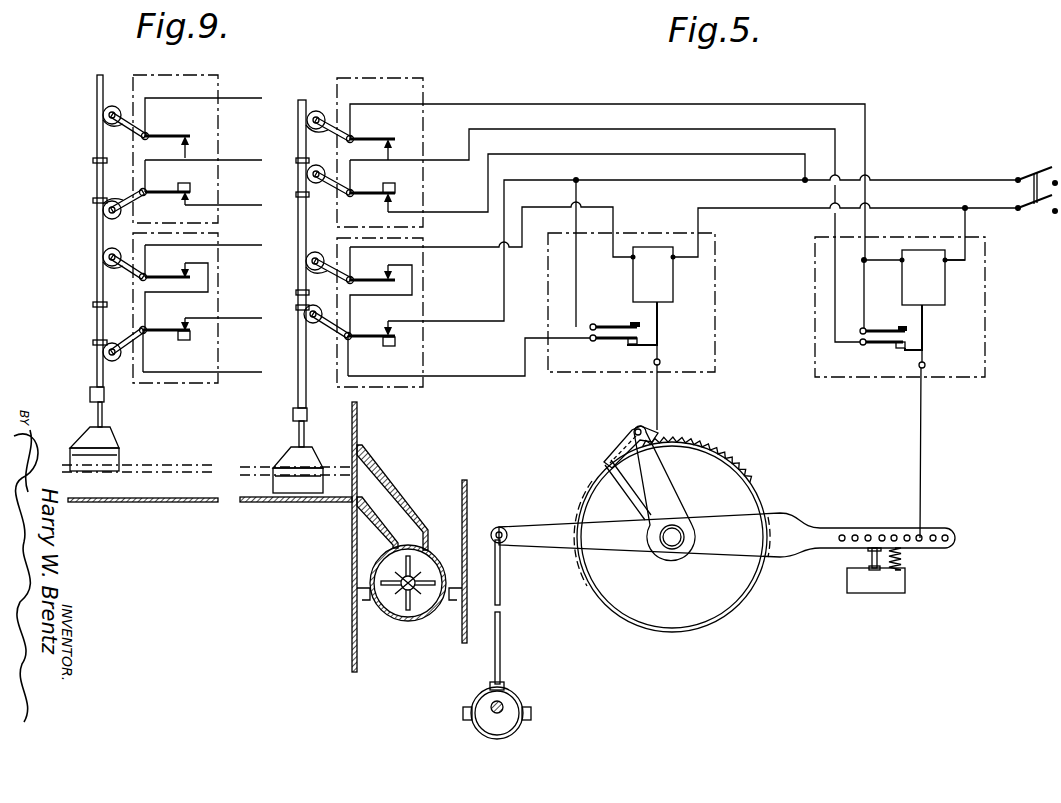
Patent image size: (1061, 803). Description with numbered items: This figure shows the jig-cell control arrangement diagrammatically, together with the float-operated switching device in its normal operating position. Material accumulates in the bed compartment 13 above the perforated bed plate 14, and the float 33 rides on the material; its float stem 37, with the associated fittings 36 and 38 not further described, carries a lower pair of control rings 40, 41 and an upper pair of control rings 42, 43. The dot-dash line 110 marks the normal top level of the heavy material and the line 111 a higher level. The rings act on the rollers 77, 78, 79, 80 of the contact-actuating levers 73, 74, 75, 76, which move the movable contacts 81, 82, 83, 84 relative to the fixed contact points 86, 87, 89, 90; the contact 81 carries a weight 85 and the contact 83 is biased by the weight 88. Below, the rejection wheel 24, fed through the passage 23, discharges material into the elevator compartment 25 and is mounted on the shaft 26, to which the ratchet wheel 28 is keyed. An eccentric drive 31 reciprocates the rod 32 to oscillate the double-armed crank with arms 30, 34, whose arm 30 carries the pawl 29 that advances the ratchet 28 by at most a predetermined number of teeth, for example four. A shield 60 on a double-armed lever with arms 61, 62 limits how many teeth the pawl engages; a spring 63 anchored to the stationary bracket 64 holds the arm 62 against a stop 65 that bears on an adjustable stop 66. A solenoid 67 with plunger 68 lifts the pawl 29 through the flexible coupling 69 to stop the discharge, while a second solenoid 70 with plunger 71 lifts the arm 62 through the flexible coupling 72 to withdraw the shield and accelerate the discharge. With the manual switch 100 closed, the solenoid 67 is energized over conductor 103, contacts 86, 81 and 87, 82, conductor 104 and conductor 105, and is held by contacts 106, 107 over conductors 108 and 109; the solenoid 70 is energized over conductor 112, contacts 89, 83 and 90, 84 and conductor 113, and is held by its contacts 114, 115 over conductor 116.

In FIG. 9, the bed compartment 13 is at (198, 503).
In FIG. 5, the bed compartment 13 is at (266, 495).
In FIG. 9, the perforated bed plate 14 is at (178, 503).
In FIG. 5, the perforated bed plate 14 is at (321, 500).
In FIG. 5, the chute 23 is at (403, 507).
In FIG. 5, the rejection wheel 24 is at (412, 580).
In FIG. 5, the elevator compartment 25 is at (366, 640).
In FIG. 5, the shaft 26 is at (398, 594).
In FIG. 5, the ratchet wheel 28 is at (745, 484).
In FIG. 5, the pawl 29 is at (661, 437).
In FIG. 5, the crank arm 30 is at (658, 488).
In FIG. 5, the eccentric drive 31 is at (525, 727).
In FIG. 5, the rod 32 is at (501, 618).
In FIG. 9, the float 33 is at (108, 470).
In FIG. 5, the float 33 is at (288, 484).
In FIG. 5, the crank arm 34 is at (546, 538).
In FIG. 9, the stem 36 is at (100, 418).
In FIG. 5, the stem 36 is at (299, 432).
In FIG. 9, the rod 37 is at (94, 242).
In FIG. 5, the rod 37 is at (298, 372).
In FIG. 9, the collar 38 is at (90, 392).
In FIG. 5, the collar 38 is at (307, 414).
In FIG. 9, the control ring 40 is at (93, 343).
In FIG. 5, the control ring 40 is at (298, 310).
In FIG. 9, the control ring 41 is at (93, 304).
In FIG. 5, the control ring 41 is at (296, 292).
In FIG. 9, the control ring 42 is at (93, 200).
In FIG. 5, the control ring 42 is at (297, 196).
In FIG. 9, the control ring 43 is at (93, 160).
In FIG. 5, the control ring 43 is at (298, 158).
In FIG. 5, the shield 60 is at (620, 453).
In FIG. 5, the lever arm 61 is at (622, 483).
In FIG. 5, the lever arm 62 is at (774, 571).
In FIG. 5, the spring 63 is at (905, 560).
In FIG. 5, the stationary bracket 64 is at (892, 596).
In FIG. 5, the stop 65 is at (870, 552).
In FIG. 5, the adjustable stop 66 is at (870, 572).
In FIG. 5, the solenoid 67 is at (653, 274).
In FIG. 5, the plunger 68 is at (660, 333).
In FIG. 5, the flexible coupling 69 is at (660, 400).
In FIG. 5, the solenoid 70 is at (913, 277).
In FIG. 5, the plunger 71 is at (926, 326).
In FIG. 5, the flexible coupling 72 is at (926, 436).
In FIG. 9, the contact-actuating lever 73 is at (118, 340).
In FIG. 5, the contact-actuating lever 73 is at (333, 328).
In FIG. 9, the contact-actuating lever 74 is at (120, 272).
In FIG. 5, the contact-actuating lever 74 is at (326, 270).
In FIG. 9, the contact-actuating lever 75 is at (126, 200).
In FIG. 5, the contact-actuating lever 75 is at (333, 186).
In FIG. 9, the contact-actuating lever 76 is at (122, 130).
In FIG. 5, the contact-actuating lever 76 is at (333, 131).
In FIG. 9, the roller 77 is at (114, 362).
In FIG. 5, the roller 77 is at (315, 305).
In FIG. 9, the roller 78 is at (103, 260).
In FIG. 5, the roller 78 is at (306, 257).
In FIG. 9, the roller 79 is at (103, 212).
In FIG. 5, the roller 79 is at (307, 174).
In FIG. 9, the roller 80 is at (104, 112).
In FIG. 5, the roller 80 is at (317, 110).
In FIG. 9, the movable contact 81 is at (161, 333).
In FIG. 5, the movable contact 81 is at (366, 340).
In FIG. 9, the movable contact 82 is at (192, 279).
In FIG. 5, the movable contact 82 is at (376, 278).
In FIG. 9, the movable contact 83 is at (156, 196).
In FIG. 5, the movable contact 83 is at (369, 196).
In FIG. 9, the movable contact 84 is at (181, 134).
In FIG. 5, the movable contact 84 is at (379, 137).
In FIG. 9, the weight 85 is at (186, 342).
In FIG. 5, the weight 85 is at (392, 347).
In FIG. 9, the fixed contact point 86 is at (183, 322).
In FIG. 5, the fixed contact point 86 is at (386, 328).
In FIG. 9, the fixed contact point 87 is at (185, 266).
In FIG. 5, the fixed contact point 87 is at (395, 273).
In FIG. 9, the weight 88 is at (178, 186).
In FIG. 5, the weight 88 is at (394, 188).
In FIG. 9, the fixed contact 89 is at (190, 201).
In FIG. 5, the fixed contact 89 is at (394, 205).
In FIG. 9, the fixed contact point 90 is at (187, 151).
In FIG. 5, the fixed contact point 90 is at (394, 151).
In FIG. 5, the switch 100 is at (1034, 177).
In FIG. 9, the conductor 103 is at (230, 320).
In FIG. 5, the conductor 103 is at (645, 180).
In FIG. 9, the conductor 104 is at (229, 246).
In FIG. 5, the conductor 104 is at (486, 247).
In FIG. 5, the conductor 105 is at (762, 212).
In FIG. 5, the holding contact 106 is at (618, 325).
In FIG. 5, the holding contact 107 is at (617, 342).
In FIG. 5, the conductor 108 is at (578, 280).
In FIG. 9, the conductor 109 is at (236, 374).
In FIG. 5, the conductor 109 is at (478, 378).
In FIG. 9, the level line 110 is at (180, 472).
In FIG. 5, the level line 110 is at (263, 475).
In FIG. 9, the level line 111 is at (160, 464).
In FIG. 5, the level line 111 is at (252, 467).
In FIG. 9, the conductor 112 is at (240, 205).
In FIG. 5, the conductor 112 is at (592, 154).
In FIG. 9, the conductor 113 is at (243, 92).
In FIG. 5, the conductor 113 is at (617, 104).
In FIG. 5, the holding contact 114 is at (885, 330).
In FIG. 5, the holding contact 115 is at (881, 345).
In FIG. 9, the conductor 116 is at (239, 160).
In FIG. 5, the conductor 116 is at (636, 129).